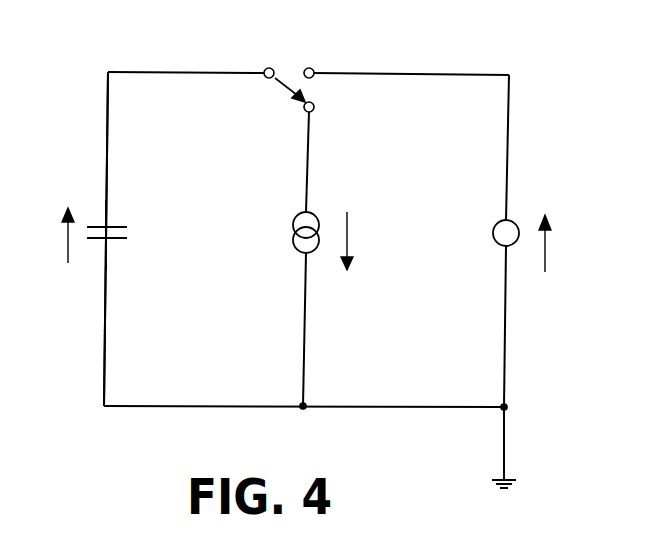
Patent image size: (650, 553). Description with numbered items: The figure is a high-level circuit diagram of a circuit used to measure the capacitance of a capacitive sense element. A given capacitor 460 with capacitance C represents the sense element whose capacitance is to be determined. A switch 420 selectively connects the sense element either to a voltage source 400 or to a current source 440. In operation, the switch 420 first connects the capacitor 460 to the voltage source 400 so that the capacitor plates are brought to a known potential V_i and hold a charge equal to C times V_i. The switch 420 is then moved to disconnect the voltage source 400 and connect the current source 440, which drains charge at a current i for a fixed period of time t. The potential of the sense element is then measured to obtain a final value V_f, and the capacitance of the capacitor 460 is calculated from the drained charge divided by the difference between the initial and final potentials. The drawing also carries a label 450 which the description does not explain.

The voltage source 400 is at (514, 223).
The switch 420 is at (290, 68).
The current source 440 is at (166, 239).
The current source 450 is at (331, 223).
The capacitor 460 is at (130, 238).